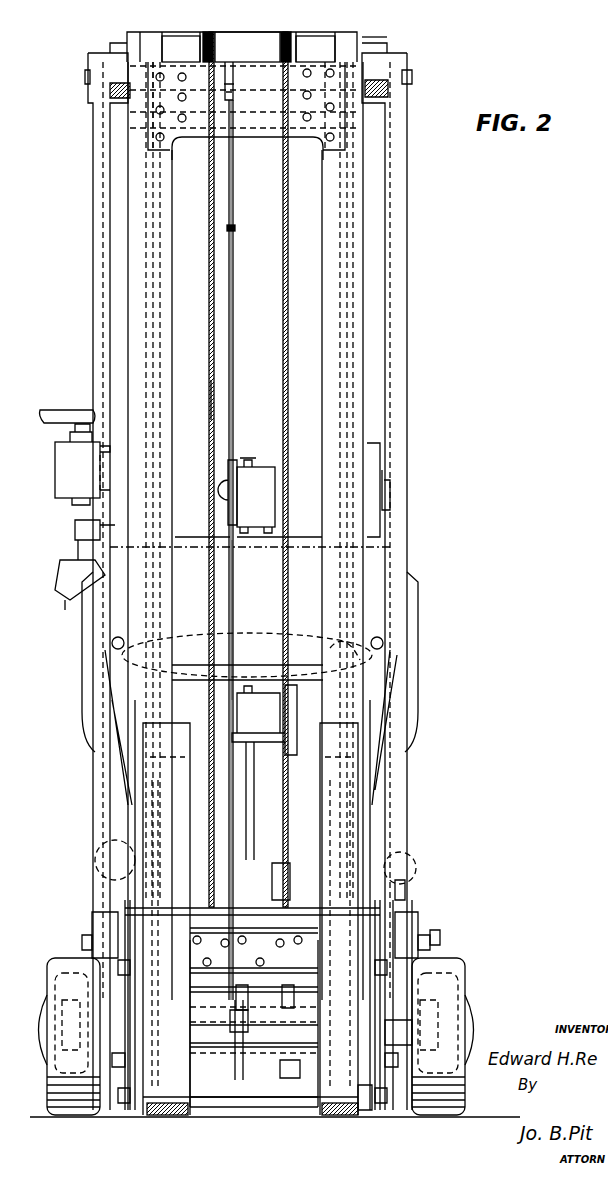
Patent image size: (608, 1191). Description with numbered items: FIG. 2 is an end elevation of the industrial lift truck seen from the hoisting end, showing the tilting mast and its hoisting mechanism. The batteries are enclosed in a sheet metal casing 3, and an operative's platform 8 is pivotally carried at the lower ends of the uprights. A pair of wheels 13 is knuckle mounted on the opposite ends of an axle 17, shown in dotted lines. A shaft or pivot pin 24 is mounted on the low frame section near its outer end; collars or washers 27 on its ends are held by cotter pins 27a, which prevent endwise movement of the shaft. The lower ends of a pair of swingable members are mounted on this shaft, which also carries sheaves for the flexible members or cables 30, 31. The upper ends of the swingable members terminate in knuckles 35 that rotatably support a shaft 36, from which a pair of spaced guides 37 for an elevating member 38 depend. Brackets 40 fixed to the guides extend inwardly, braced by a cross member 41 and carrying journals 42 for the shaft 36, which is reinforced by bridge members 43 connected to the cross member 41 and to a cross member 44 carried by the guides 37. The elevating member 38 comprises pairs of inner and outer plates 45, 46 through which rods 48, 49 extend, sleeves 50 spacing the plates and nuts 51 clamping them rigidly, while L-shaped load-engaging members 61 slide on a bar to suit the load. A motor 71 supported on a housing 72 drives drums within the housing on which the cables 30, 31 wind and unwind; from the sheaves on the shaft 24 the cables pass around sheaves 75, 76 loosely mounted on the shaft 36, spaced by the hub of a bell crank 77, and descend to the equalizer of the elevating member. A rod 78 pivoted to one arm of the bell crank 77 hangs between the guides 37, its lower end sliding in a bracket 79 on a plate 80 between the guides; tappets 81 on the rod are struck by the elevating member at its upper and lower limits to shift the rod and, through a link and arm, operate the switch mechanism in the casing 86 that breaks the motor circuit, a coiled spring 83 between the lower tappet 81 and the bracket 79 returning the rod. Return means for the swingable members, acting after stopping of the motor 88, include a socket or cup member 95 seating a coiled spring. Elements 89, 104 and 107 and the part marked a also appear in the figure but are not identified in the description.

The sheet metal casing 3 is at (400, 53).
The operative's platform 8 is at (229, 498).
The wheels 13 is at (52, 1118).
The axle 17 is at (395, 1022).
The shaft or pivot pin 24 is at (425, 945).
The collars or washers 27 is at (92, 930).
The cotter pins 27a is at (82, 942).
The flexible member 30 is at (210, 400).
The flexible member 31 is at (255, 360).
The knuckles 35 is at (88, 62).
The shaft 36 is at (413, 76).
The guides 37 is at (160, 336).
The elevating member 38 is at (250, 1119).
The brackets 40 is at (140, 33).
The cross member 41 is at (248, 34).
The journals 42 is at (118, 58).
The bridge members 43 is at (196, 50).
The cross member 44 is at (264, 130).
The inner plate 45 is at (115, 1070).
The inner plate 46 is at (393, 1070).
The rod 48 is at (254, 1017).
The rod 49 is at (293, 1080).
The sleeves 50 is at (245, 1117).
The nuts 51 is at (98, 972).
The L-shaped members 61 is at (160, 1117).
The motor 71 is at (68, 480).
The housing 72 is at (298, 690).
The sheave 75 is at (208, 34).
The sheave 76 is at (287, 34).
The bell crank 77 is at (231, 64).
The rod 78 is at (234, 590).
The bracket 79 is at (236, 995).
The plate 80 is at (266, 1065).
The tappets 81 is at (234, 228).
The coiled spring 83 is at (252, 1011).
The casing 86 is at (300, 867).
The motor 88 is at (378, 448).
The cross member 89 is at (300, 535).
The socket or cup member 95 is at (95, 855).
The valve 104 is at (76, 532).
The lever 107 is at (78, 602).
The cable loop a is at (341, 645).